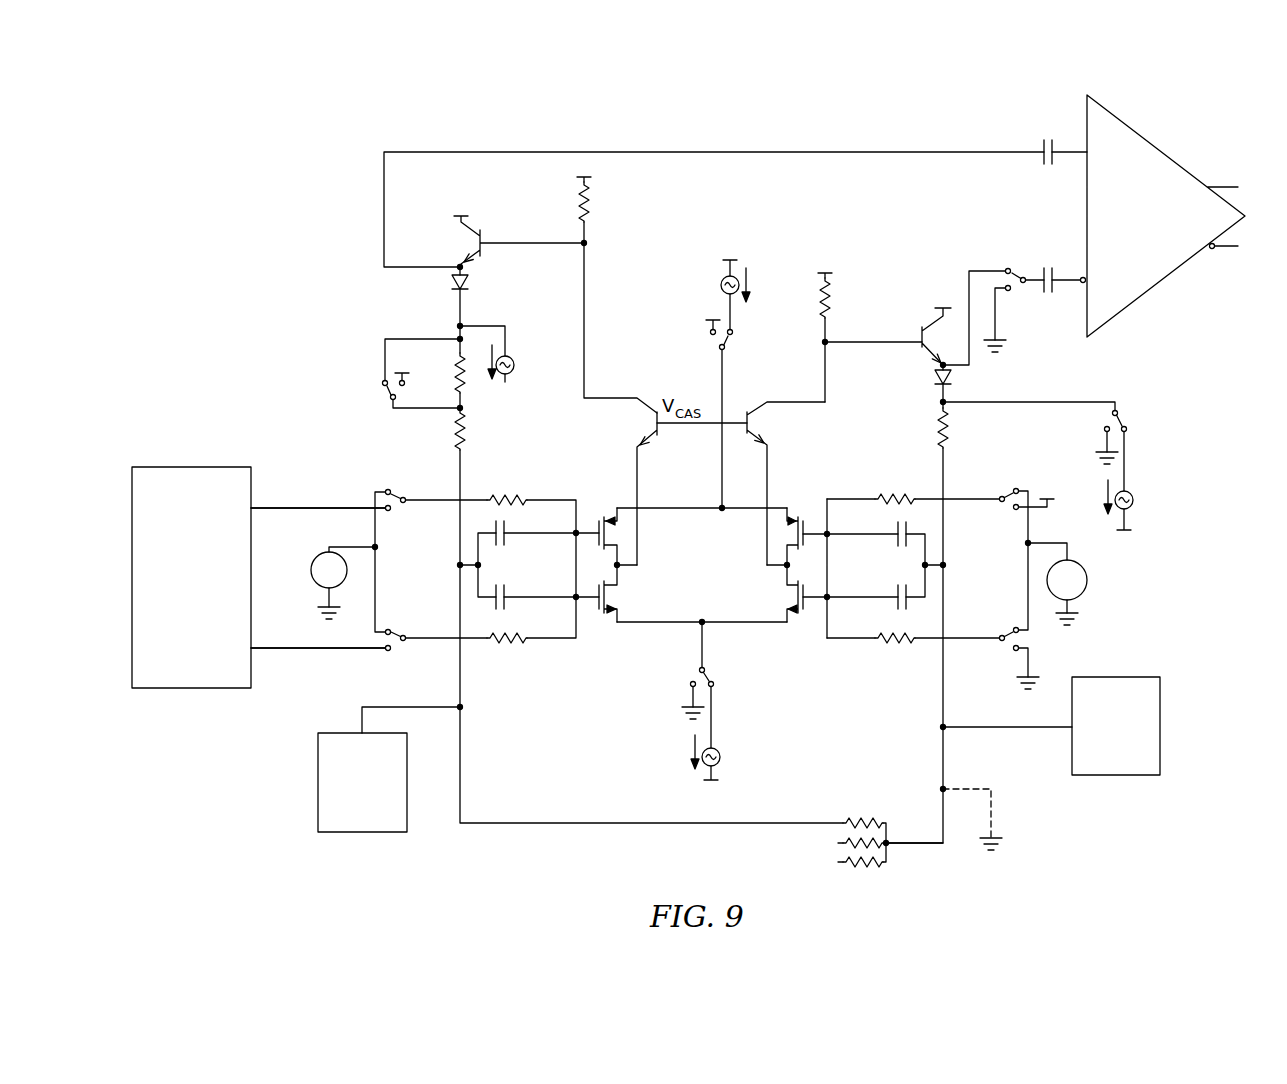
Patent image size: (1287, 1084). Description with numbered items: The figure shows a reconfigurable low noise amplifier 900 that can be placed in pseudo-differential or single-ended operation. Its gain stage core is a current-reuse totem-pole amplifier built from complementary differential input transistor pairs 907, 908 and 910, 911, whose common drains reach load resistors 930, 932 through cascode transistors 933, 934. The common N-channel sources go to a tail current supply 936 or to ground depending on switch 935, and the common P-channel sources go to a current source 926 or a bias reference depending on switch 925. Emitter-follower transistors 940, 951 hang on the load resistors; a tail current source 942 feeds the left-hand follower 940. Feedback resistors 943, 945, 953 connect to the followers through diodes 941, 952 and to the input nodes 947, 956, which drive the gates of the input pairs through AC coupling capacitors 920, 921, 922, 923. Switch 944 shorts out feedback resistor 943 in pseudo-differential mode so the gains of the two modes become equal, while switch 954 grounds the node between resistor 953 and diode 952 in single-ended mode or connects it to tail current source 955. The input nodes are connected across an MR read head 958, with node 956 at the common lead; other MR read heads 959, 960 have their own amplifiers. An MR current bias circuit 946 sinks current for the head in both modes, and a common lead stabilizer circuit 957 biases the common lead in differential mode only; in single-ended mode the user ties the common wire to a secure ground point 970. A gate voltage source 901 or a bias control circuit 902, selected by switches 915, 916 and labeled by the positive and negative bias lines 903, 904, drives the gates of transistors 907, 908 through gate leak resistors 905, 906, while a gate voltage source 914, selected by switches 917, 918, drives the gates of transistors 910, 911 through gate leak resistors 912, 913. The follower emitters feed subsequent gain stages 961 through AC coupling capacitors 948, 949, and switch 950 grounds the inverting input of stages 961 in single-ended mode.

The reconfigurable low noise amplifier 900 is at (292, 141).
The gate voltage source 901 is at (312, 576).
The bias control circuit 902 is at (191, 577).
The positive bias line 903 is at (308, 511).
The negative bias line 904 is at (308, 651).
The gate leak resistor 905 is at (499, 498).
The gate leak resistor 906 is at (505, 648).
The complementary differential input transistor 907 is at (602, 511).
The complementary differential input transistor 908 is at (622, 612).
The complementary differential input transistor 910 is at (791, 510).
The complementary differential input transistor 911 is at (778, 603).
The gate leak resistor 912 is at (886, 497).
The gate leak resistor 913 is at (893, 646).
The gate voltage source 914 is at (1090, 580).
The switch 915 is at (397, 494).
The switch 916 is at (420, 617).
The switch 917 is at (1005, 491).
The switch 918 is at (1005, 630).
The AC coupling capacitor 920 is at (510, 541).
The AC coupling capacitor 921 is at (510, 605).
The AC coupling capacitor 922 is at (888, 546).
The AC coupling capacitor 923 is at (888, 606).
The switch 925 is at (729, 351).
The current source 926 is at (720, 290).
The load resistor 930 is at (584, 205).
The load resistor 932 is at (830, 303).
The cascode transistor 933 is at (646, 421).
The cascode transistor 934 is at (757, 420).
The switch 935 is at (706, 673).
The tail current supply 936 is at (721, 758).
The emitter-follower transistor 940 is at (480, 255).
The diode 941 is at (457, 296).
The tail current source 942 is at (514, 362).
The feedback resistor 943 is at (466, 384).
The switch 944 is at (392, 400).
The feedback resistor 945 is at (455, 437).
The MR current bias circuit 946 is at (362, 782).
The input node 947 is at (466, 760).
The AC coupling capacitor 948 is at (1040, 160).
The AC coupling capacitor 949 is at (1040, 290).
The switch 950 is at (1019, 270).
The emitter-follower transistor 951 is at (924, 356).
The diode 952 is at (953, 381).
The feedback resistor 953 is at (948, 428).
The switch 954 is at (1121, 411).
The tail current source 955 is at (1135, 500).
The input node 956 is at (941, 757).
The common lead stabilizer circuit 957 is at (1116, 726).
The MR read head 958 is at (855, 819).
The MR read head 959 is at (840, 846).
The MR read head 960 is at (856, 868).
The subsequent gain stages 961 is at (1166, 216).
The secure ground point 970 is at (1003, 808).